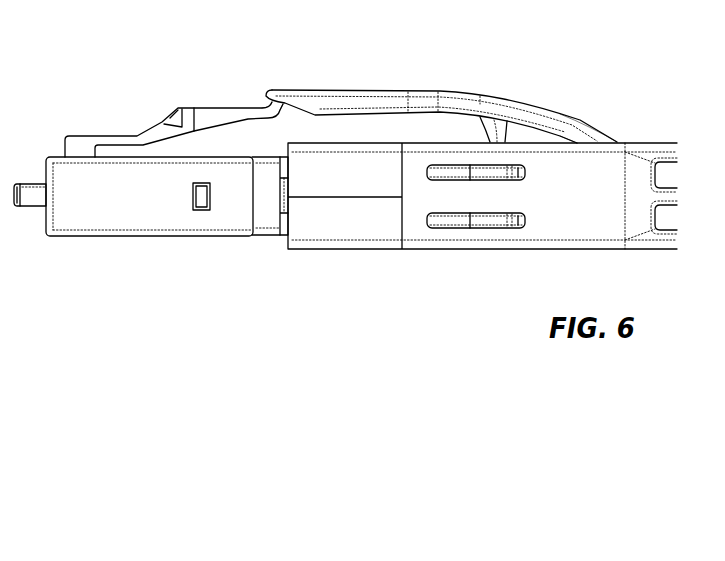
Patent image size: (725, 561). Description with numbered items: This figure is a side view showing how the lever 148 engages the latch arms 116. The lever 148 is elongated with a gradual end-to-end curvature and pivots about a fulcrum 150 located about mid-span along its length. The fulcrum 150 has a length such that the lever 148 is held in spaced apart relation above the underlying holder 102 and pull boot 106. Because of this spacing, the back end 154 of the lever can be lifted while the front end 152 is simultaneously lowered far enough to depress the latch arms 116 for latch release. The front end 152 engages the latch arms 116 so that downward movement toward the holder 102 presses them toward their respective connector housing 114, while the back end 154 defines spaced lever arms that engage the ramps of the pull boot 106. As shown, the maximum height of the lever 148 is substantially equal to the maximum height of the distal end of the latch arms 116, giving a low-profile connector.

The holder 102 is at (317, 237).
The pull boot 106 is at (428, 238).
The connector housing 114 is at (86, 222).
The latch arms 116 is at (228, 107).
The lever 148 is at (333, 90).
The fulcrum 150 is at (505, 125).
The front end 152 is at (279, 78).
The back end 154 is at (590, 113).